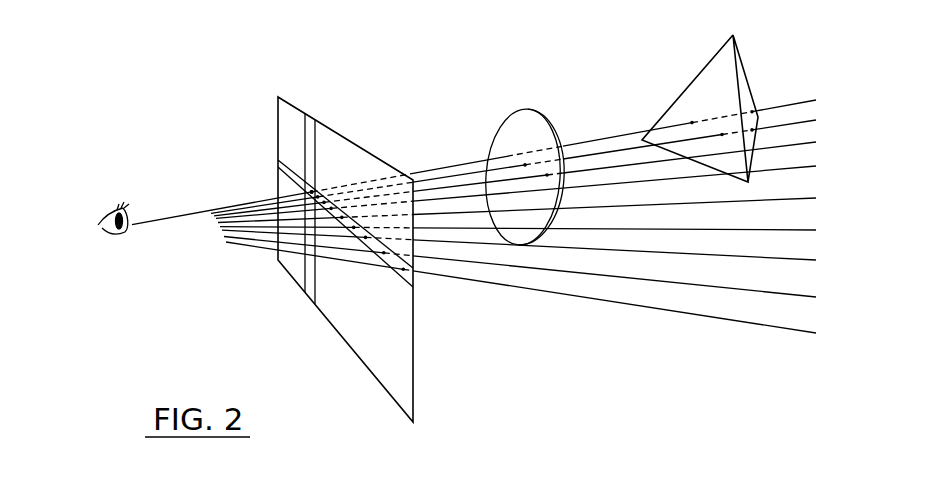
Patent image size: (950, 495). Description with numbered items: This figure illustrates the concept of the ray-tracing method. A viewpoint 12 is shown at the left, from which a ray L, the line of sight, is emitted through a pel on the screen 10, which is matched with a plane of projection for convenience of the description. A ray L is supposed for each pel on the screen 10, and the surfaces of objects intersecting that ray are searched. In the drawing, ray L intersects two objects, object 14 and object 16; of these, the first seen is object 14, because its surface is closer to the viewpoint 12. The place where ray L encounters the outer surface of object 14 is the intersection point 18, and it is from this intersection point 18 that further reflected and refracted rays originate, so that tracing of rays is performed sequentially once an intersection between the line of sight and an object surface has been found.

The screen 10 is at (414, 365).
The viewpoint 12 is at (131, 257).
The object 14 is at (532, 108).
The object 16 is at (693, 80).
The intersection point 18 is at (507, 155).
The ray (line of sight) L is at (186, 212).